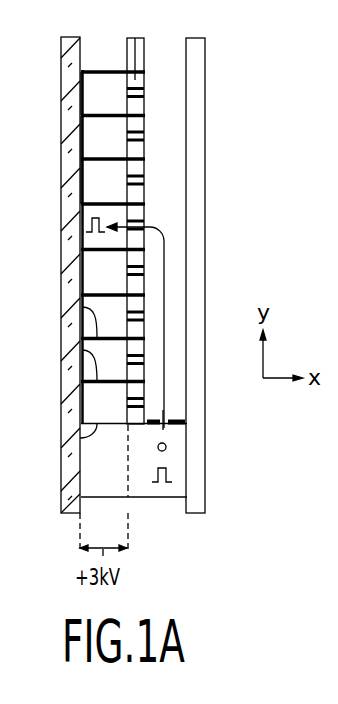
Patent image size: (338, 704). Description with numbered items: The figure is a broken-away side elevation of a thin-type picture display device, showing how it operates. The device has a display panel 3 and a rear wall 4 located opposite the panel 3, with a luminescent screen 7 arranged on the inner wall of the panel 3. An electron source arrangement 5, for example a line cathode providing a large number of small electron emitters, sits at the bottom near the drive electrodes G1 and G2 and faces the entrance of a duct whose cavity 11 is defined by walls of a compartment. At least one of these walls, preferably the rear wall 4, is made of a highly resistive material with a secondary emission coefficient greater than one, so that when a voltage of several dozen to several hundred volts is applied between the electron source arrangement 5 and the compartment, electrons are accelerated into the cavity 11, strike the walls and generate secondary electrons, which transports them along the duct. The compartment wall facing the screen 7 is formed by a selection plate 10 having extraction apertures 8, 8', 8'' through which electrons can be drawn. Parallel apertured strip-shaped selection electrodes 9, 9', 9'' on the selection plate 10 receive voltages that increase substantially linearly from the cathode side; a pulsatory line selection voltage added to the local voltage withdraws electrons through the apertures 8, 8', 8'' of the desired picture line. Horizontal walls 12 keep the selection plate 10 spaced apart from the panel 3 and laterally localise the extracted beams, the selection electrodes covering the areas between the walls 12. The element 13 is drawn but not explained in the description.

The display panel 3 is at (64, 52).
The rear wall 4 is at (196, 272).
The electron source arrangement 5 is at (166, 449).
The luminescent screen 7 is at (80, 214).
The extraction aperture 8 is at (190, 99).
The extraction aperture 8' is at (190, 137).
The extraction aperture 8'' is at (193, 185).
The selection electrode 9 is at (88, 93).
The selection electrode 9' is at (88, 138).
The selection electrode 9'' is at (88, 181).
The selection plate 10 is at (135, 38).
The cavity 11 is at (178, 227).
The horizontal wall 12 is at (80, 357).
The last dynode 13 is at (80, 438).
The drive electrode G1 is at (175, 428).
The drive electrode G2 is at (173, 415).